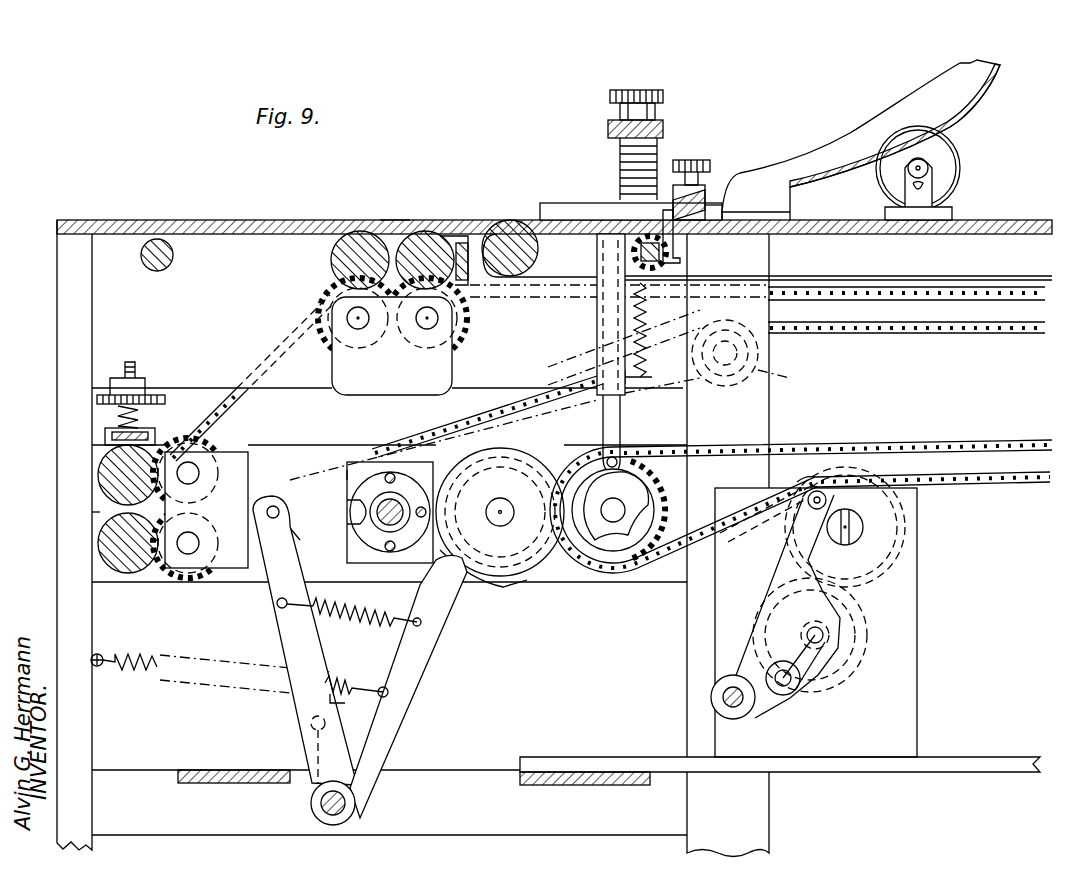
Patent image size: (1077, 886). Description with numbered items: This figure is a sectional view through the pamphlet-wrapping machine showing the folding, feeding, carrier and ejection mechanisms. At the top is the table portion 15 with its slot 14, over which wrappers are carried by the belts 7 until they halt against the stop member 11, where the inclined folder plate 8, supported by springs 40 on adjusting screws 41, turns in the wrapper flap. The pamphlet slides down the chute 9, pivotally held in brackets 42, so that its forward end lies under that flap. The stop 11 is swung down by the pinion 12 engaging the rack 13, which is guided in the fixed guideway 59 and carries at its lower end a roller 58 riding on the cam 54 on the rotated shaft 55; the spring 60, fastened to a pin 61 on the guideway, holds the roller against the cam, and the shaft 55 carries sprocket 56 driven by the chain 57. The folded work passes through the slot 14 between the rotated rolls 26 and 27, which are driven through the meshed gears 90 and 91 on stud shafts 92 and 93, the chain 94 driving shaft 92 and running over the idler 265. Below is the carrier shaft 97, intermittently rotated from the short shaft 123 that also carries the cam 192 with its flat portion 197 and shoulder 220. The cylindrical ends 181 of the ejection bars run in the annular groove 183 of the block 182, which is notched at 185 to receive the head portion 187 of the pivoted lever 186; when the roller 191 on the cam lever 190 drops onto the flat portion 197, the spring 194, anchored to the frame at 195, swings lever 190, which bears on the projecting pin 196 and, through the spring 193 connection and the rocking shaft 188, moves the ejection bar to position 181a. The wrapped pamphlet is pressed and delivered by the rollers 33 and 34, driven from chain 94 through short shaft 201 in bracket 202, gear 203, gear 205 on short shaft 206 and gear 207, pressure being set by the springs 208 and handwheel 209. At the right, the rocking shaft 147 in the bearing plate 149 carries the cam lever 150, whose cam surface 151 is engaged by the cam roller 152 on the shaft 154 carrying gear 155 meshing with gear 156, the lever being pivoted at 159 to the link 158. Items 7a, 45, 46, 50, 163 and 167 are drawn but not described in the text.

The table portion 15 is at (326, 220).
The slot 14 is at (395, 218).
The rotated roll 26 is at (333, 258).
The rotated roll 27 is at (433, 232).
The roller 7a is at (512, 222).
The pin 61 is at (594, 206).
The adjusting screw 46 is at (620, 156).
The screw head 45 is at (641, 92).
The cam 54 is at (663, 100).
The nut 50 is at (663, 130).
The adjusting screw 41 is at (697, 163).
The inclined folder plate 8 is at (703, 196).
The spring 40 is at (722, 206).
The stop member 11 is at (675, 252).
The rack 13 is at (632, 252).
The pinion 12 is at (655, 284).
The fixed guideway 59 is at (604, 318).
The spring 60 is at (624, 336).
The roller 58 is at (603, 455).
The idler 265 is at (689, 350).
The chute 9 is at (870, 172).
The conveyor belt 7 is at (840, 209).
The bracket 42 is at (933, 179).
The chain 94 is at (818, 288).
The gear 91 is at (322, 336).
The gear 90 is at (465, 326).
The stud shaft 92 is at (358, 326).
The stud shaft 93 is at (427, 326).
The handwheel 209 is at (155, 394).
The spring 208 is at (118, 414).
The pressing roller 33 is at (104, 478).
The pressing roller 34 is at (108, 552).
The gear 207 is at (104, 527).
The short shaft 201 is at (188, 465).
The gear 205 is at (190, 578).
The bracket 202 is at (250, 458).
The gear 203 is at (222, 445).
The notch 185 is at (347, 482).
The annular groove 183 is at (388, 472).
The block 182 is at (350, 470).
The intermittently-rotated shaft 97 is at (374, 514).
The ejection bar in ejection position 181a is at (347, 510).
The head portion 187 is at (292, 534).
The cylindrical portion 181 is at (406, 450).
The cam 192 is at (522, 452).
The shoulder 220 is at (494, 514).
The flat portion 197 is at (529, 521).
The short shaft 123 is at (480, 528).
The rotated shaft 55 is at (613, 510).
The sprocket 56 is at (604, 562).
The chain 57 is at (721, 449).
The roller 191 is at (458, 578).
The bearing plate 149 is at (902, 716).
The gear 156 is at (906, 538).
The shaft 167 is at (864, 527).
The link 158 is at (823, 490).
The pivot 159 is at (810, 503).
The cam lever 150 is at (776, 560).
The cam surface 151 is at (848, 610).
The gear 155 is at (862, 628).
The shaft 154 is at (826, 638).
The link 163 is at (808, 660).
The cam roller 152 is at (792, 692).
The rocking shaft 147 is at (740, 706).
The frame attachment 195 is at (101, 654).
The spring 194 is at (152, 660).
The pivoted lever 186 is at (270, 624).
The short shaft 206 is at (276, 500).
The cam lever 190 is at (430, 660).
The spring 193 is at (355, 624).
The projecting pin 196 is at (311, 724).
The rocking shaft 188 is at (320, 800).